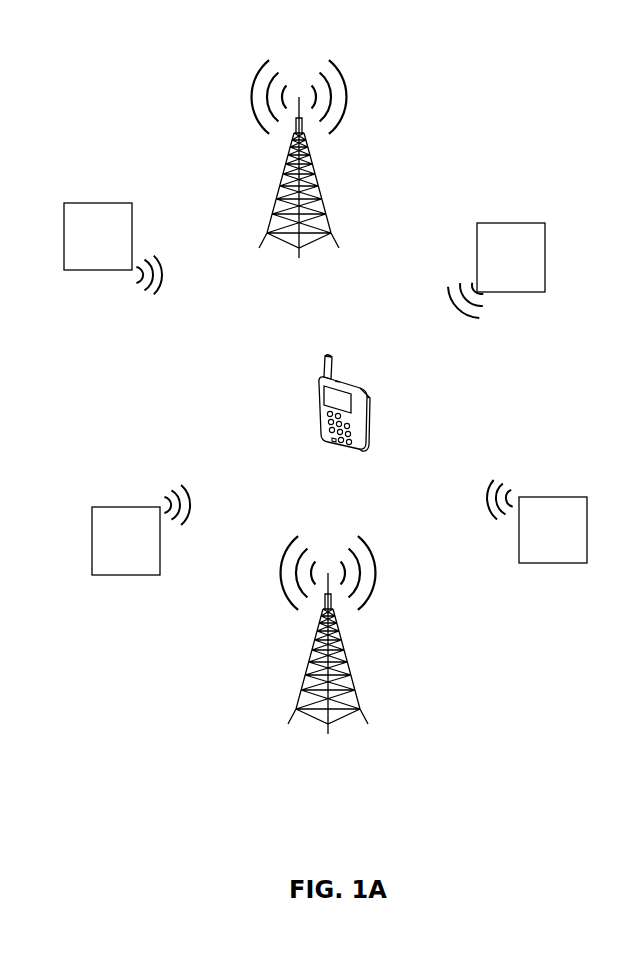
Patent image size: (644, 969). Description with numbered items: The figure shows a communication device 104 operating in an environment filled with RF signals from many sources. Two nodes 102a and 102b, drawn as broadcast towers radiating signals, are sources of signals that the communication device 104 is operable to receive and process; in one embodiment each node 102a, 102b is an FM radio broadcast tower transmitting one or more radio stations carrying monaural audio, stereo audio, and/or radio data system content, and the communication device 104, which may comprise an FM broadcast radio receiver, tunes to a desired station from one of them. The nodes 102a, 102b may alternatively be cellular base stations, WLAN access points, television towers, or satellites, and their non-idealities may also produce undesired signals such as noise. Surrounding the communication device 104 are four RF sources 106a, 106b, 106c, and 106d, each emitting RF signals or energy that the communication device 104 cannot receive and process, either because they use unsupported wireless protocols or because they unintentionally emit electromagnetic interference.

The node 102a is at (311, 665).
The node 102b is at (281, 192).
The communication device 104 is at (319, 387).
The RF source 106a is at (113, 248).
The RF source 106b is at (496, 270).
The RF source 106c is at (141, 530).
The RF source 106d is at (537, 521).